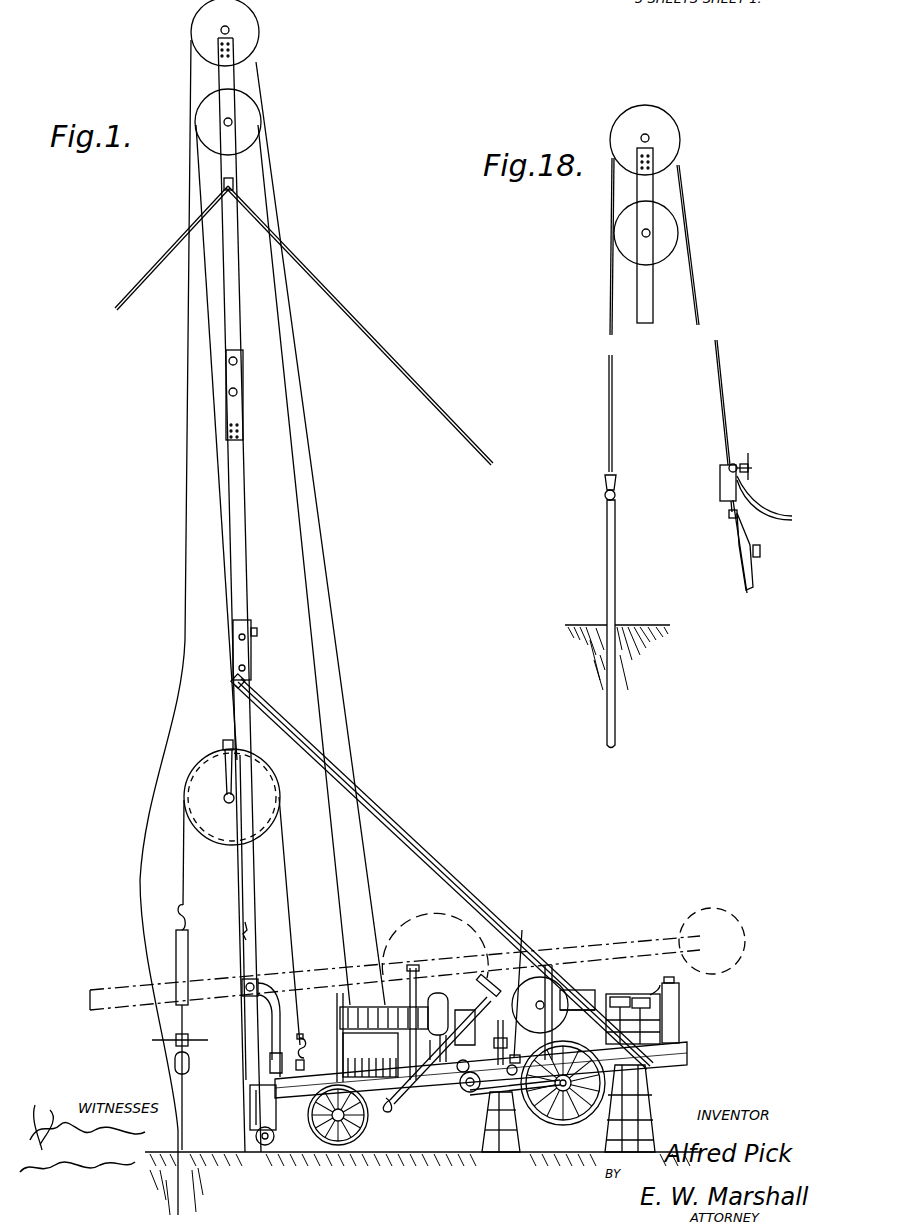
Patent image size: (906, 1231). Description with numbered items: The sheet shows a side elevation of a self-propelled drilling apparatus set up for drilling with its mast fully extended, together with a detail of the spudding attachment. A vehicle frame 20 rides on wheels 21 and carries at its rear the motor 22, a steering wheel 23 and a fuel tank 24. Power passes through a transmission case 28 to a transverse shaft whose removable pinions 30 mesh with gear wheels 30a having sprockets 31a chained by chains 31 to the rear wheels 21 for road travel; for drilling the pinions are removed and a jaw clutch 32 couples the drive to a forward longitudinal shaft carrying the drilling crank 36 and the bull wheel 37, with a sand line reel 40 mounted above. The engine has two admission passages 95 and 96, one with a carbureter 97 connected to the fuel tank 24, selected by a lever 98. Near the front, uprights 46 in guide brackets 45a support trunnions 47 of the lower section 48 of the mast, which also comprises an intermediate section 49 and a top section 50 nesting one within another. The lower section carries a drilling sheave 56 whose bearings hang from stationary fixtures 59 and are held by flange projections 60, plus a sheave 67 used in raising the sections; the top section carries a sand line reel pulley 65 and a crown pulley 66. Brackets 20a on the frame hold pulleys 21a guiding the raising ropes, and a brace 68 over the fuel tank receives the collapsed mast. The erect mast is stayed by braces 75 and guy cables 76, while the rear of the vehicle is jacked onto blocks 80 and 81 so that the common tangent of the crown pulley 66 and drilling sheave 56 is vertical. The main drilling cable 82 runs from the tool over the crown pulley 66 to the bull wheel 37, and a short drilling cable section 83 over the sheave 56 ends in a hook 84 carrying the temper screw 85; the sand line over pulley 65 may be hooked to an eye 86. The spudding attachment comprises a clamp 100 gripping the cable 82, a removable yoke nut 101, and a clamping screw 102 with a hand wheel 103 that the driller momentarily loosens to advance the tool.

In FIG. 1, the vehicle frame 20 is at (680, 1050).
In FIG. 1, the downwardly extending brackets 20a is at (250, 1108).
In FIG. 1, the wheels 21 is at (368, 1125).
In FIG. 1, the pulleys 21a is at (274, 1138).
In FIG. 1, the motor 22 is at (620, 997).
In FIG. 1, the steering wheel 23 is at (487, 997).
In FIG. 1, the fuel tank 24 is at (572, 995).
In FIG. 1, the transmission case 28 is at (504, 1042).
In FIG. 1, the removable pinions 30 is at (452, 1033).
In FIG. 1, the gear wheels 30a is at (468, 1093).
In FIG. 1, the chains 31 is at (530, 1088).
In FIG. 1, the sprockets 31a is at (470, 1070).
In FIG. 1, the jaw clutch 32 is at (470, 988).
In FIG. 1, the drilling crank 36 is at (293, 1046).
In FIG. 18, the drilling crank 36 is at (740, 555).
In FIG. 1, the bull wheel 37 is at (374, 1052).
In FIG. 1, the sand line reel 40 is at (385, 1007).
In FIG. 1, the guide brackets 45a is at (296, 1067).
In FIG. 1, the uprights 46 is at (281, 1022).
In FIG. 1, the trunnions 47 is at (242, 996).
In FIG. 1, the lower section of the mast 48 is at (248, 752).
In FIG. 1, the intermediate section 49 is at (247, 528).
In FIG. 1, the top section 50 is at (237, 262).
In FIG. 18, the top section 50 is at (653, 302).
In FIG. 1, the drilling sheave 56 is at (278, 802).
In FIG. 1, the stationary fixtures 59 is at (227, 740).
In FIG. 1, the flange projections 60 is at (224, 796).
In FIG. 1, the sand line reel pulley 65 is at (255, 118).
In FIG. 18, the sand line reel pulley 65 is at (668, 228).
In FIG. 1, the crown pulley 66 is at (258, 33).
In FIG. 18, the crown pulley 66 is at (678, 145).
In FIG. 1, the pulley or sheave 67 is at (256, 632).
In FIG. 1, the brace 68 is at (548, 968).
In FIG. 1, the braces 75 is at (437, 872).
In FIG. 1, the guy cables or wires 76 is at (128, 300).
In FIG. 1, the blocks 80 is at (532, 1150).
In FIG. 1, the blocks 81 is at (640, 1150).
In FIG. 1, the main drilling cable 82 is at (186, 406).
In FIG. 18, the main drilling cable 82 is at (614, 455).
In FIG. 1, the drilling cable section 83 is at (283, 848).
In FIG. 1, the hook 84 is at (187, 912).
In FIG. 1, the temper screw 85 is at (188, 970).
In FIG. 1, the eye 86 is at (243, 936).
In FIG. 1, the admission passage 95 is at (552, 1010).
In FIG. 1, the admission passage 96 is at (680, 1003).
In FIG. 1, the carbureter 97 is at (660, 1095).
In FIG. 1, the lever 98 is at (525, 986).
In FIG. 18, the clamp 100 is at (727, 495).
In FIG. 18, the removable nut 101 is at (734, 464).
In FIG. 18, the clamping screw 102 is at (750, 472).
In FIG. 18, the hand wheel 103 is at (749, 456).